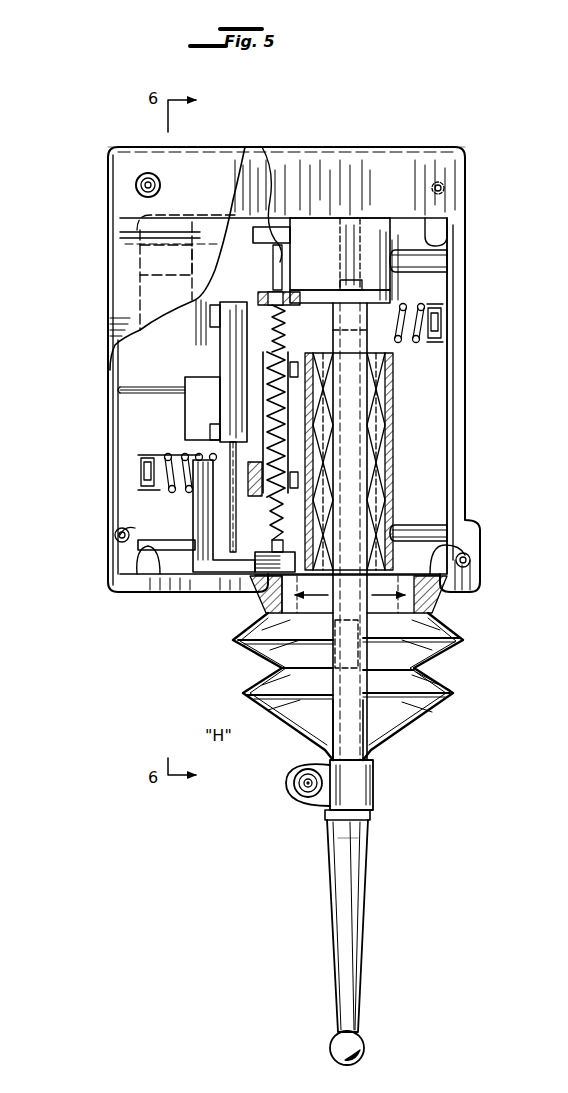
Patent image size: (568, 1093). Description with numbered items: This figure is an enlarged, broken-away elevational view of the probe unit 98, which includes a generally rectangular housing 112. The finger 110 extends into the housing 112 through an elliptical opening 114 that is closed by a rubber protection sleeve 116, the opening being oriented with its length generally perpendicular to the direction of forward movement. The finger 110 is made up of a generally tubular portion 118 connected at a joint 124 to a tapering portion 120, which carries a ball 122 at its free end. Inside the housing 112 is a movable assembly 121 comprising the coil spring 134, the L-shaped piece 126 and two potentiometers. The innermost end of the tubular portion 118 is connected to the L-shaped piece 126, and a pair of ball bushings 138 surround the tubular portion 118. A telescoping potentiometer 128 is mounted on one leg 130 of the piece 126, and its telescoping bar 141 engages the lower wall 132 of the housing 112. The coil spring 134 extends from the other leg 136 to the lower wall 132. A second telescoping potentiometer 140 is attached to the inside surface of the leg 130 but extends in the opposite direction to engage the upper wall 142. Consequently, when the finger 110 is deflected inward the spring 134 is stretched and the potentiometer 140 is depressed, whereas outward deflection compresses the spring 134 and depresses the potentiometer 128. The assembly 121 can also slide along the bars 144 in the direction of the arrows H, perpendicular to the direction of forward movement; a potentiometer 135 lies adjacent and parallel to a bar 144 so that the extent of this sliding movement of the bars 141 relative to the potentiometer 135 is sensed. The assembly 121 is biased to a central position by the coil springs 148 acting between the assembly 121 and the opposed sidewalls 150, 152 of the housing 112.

The probe unit 98 is at (456, 130).
The finger 110 is at (386, 845).
The housing 112 is at (468, 150).
The elliptical opening 114 is at (430, 615).
The rubber protection sleeve 116 is at (445, 678).
The tubular portion 118 is at (362, 718).
The tapering portion 120 is at (375, 925).
The movable assembly 121 is at (215, 510).
The ball 122 is at (365, 1042).
The joint 124 is at (380, 784).
The L-shaped piece 126 is at (322, 288).
The telescoping potentiometer 128 is at (200, 428).
The leg 130 is at (240, 349).
The lower wall 132 is at (258, 532).
The coil spring 134 is at (236, 548).
The potentiometer 135 is at (190, 398).
The leg 136 is at (291, 228).
The ball bushings 138 is at (340, 432).
The second telescoping potentiometer 140 is at (320, 395).
The telescoping bar 141 is at (272, 264).
The upper wall 142 is at (233, 215).
The bars 144 is at (440, 263).
The coil springs 148 is at (410, 312).
The sidewall 150 is at (443, 388).
The sidewall 152 is at (148, 545).